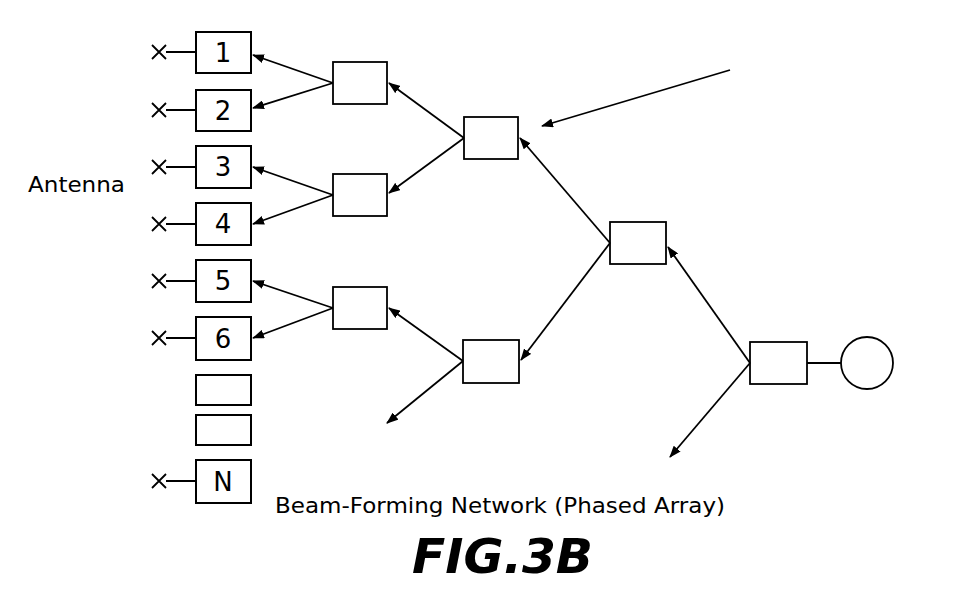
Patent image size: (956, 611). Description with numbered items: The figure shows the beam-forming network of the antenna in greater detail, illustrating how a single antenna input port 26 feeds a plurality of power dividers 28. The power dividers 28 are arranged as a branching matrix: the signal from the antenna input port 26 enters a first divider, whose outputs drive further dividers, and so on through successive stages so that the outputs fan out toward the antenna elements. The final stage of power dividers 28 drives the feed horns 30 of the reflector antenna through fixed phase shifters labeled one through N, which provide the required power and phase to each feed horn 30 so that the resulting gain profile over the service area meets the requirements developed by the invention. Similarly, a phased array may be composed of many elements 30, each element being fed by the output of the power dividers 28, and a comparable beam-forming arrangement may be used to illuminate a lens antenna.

The feed horn 30 is at (151, 51).
The power dividers 28 is at (477, 159).
The antenna input port 26 is at (867, 337).